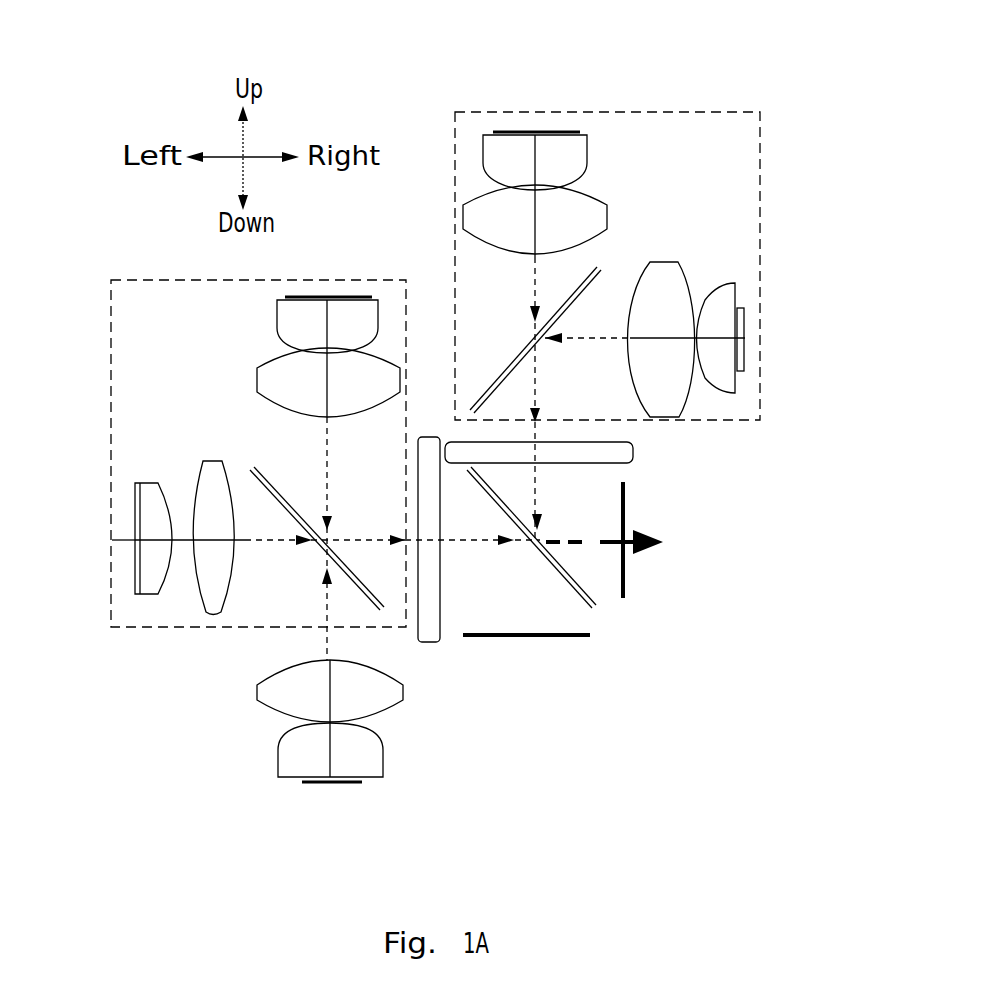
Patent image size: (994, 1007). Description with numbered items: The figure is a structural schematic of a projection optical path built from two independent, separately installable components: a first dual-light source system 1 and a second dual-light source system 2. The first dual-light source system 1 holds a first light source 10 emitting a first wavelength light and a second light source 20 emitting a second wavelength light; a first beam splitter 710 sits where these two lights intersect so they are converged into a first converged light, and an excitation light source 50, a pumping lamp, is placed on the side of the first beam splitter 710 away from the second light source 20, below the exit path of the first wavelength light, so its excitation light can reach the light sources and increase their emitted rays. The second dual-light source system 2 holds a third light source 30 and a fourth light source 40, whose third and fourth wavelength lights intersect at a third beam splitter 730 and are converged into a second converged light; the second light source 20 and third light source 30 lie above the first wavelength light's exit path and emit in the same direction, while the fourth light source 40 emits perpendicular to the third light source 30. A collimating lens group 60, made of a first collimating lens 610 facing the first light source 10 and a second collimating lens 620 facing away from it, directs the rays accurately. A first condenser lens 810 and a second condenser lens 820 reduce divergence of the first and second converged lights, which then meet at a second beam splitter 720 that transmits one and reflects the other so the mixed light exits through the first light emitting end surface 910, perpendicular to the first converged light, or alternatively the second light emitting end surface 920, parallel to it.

The first dual-light source system 1 is at (114, 280).
The second dual-light source system 2 is at (680, 112).
The first light source 10 is at (114, 532).
The second light source 20 is at (322, 300).
The third light source 30 is at (545, 135).
The fourth light source 40 is at (745, 340).
The excitation light source 50 is at (330, 782).
The collimating lens group 60 is at (215, 729).
The first collimating lens 610 is at (150, 594).
The second collimating lens 620 is at (214, 614).
The first beam splitter 710 is at (250, 470).
The second beam splitter 720 is at (594, 608).
The third beam splitter 730 is at (600, 265).
The first condenser lens 810 is at (437, 642).
The second condenser lens 820 is at (633, 452).
The first light emitting end surface 910 is at (625, 567).
The second light emitting end surface 920 is at (523, 637).